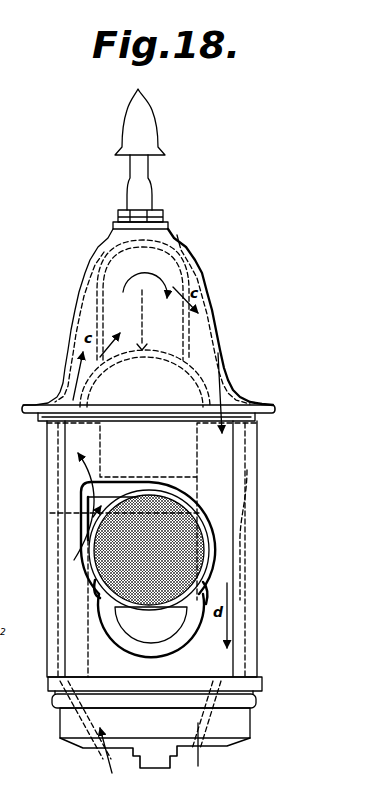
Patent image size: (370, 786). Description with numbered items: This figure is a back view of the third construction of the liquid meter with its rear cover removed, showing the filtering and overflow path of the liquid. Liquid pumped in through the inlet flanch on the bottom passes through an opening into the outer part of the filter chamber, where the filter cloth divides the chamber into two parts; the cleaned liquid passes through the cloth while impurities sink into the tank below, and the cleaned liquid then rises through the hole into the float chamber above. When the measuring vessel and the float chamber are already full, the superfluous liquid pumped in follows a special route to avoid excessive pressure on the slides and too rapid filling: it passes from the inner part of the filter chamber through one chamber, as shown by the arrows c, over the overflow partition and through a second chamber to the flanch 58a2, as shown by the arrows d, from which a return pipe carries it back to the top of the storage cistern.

The flanch 58a2 is at (222, 718).